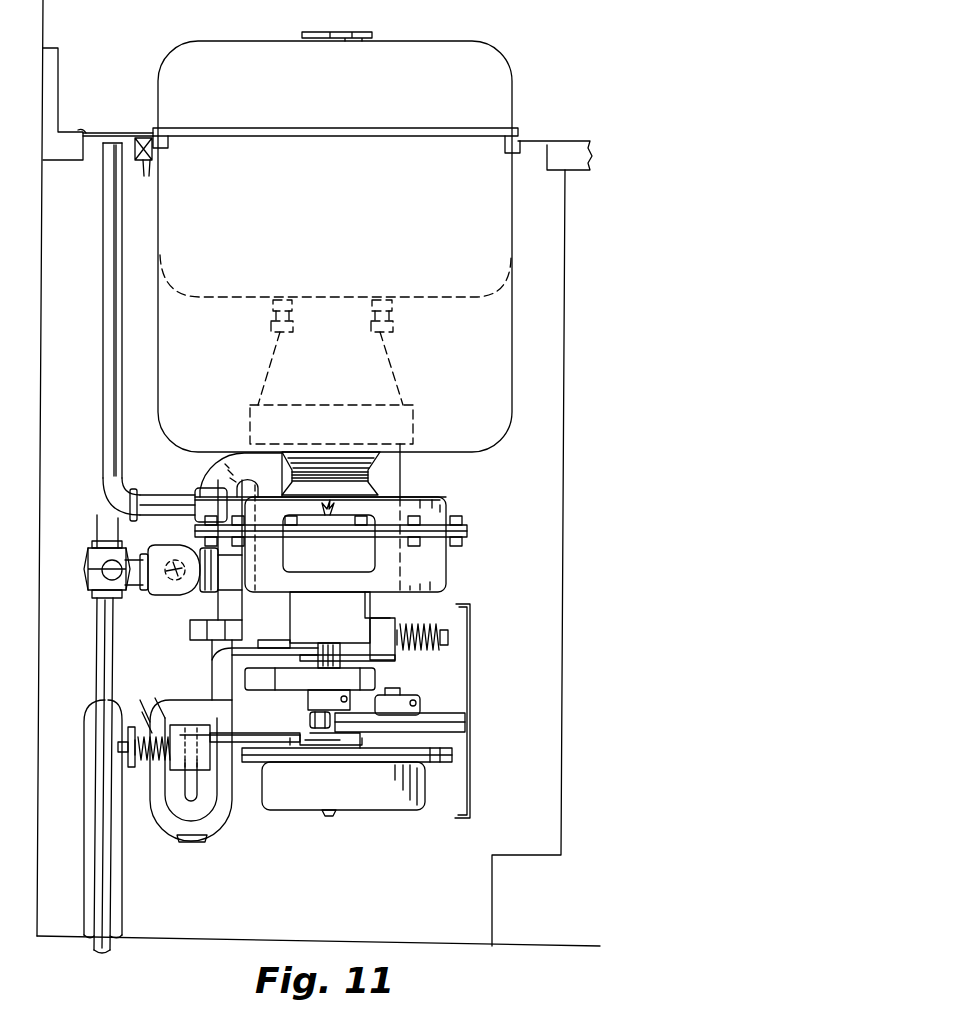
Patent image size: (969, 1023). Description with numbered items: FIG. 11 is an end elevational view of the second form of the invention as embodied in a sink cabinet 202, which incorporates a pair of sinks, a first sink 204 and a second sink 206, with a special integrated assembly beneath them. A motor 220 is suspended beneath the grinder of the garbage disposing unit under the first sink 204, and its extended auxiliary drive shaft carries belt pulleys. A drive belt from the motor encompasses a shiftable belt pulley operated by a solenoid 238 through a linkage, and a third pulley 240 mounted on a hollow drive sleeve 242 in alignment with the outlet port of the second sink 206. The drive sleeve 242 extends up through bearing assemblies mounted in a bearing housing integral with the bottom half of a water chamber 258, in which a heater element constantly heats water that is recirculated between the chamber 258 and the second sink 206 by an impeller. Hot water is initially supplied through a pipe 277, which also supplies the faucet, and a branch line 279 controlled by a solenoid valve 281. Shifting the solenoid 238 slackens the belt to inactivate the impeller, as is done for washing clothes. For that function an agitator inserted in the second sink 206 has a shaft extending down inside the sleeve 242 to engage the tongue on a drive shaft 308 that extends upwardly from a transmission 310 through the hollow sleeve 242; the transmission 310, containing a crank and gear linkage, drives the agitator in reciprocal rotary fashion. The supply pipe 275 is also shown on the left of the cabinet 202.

The sink cabinet 202 is at (563, 753).
The first sink 204 is at (498, 245).
The second sink 206 is at (497, 334).
The motor 220 is at (392, 482).
The solenoid 238 is at (408, 628).
The third pulley 240 is at (372, 689).
The hollow drive sleeve 242 is at (334, 647).
The water chamber 258 is at (432, 573).
The supply pipe 275 is at (110, 252).
The pipe 277 is at (104, 647).
The branch line 279 is at (133, 578).
The solenoid valve 281 is at (183, 548).
The drive shaft 308 is at (311, 719).
The transmission 310 is at (298, 797).